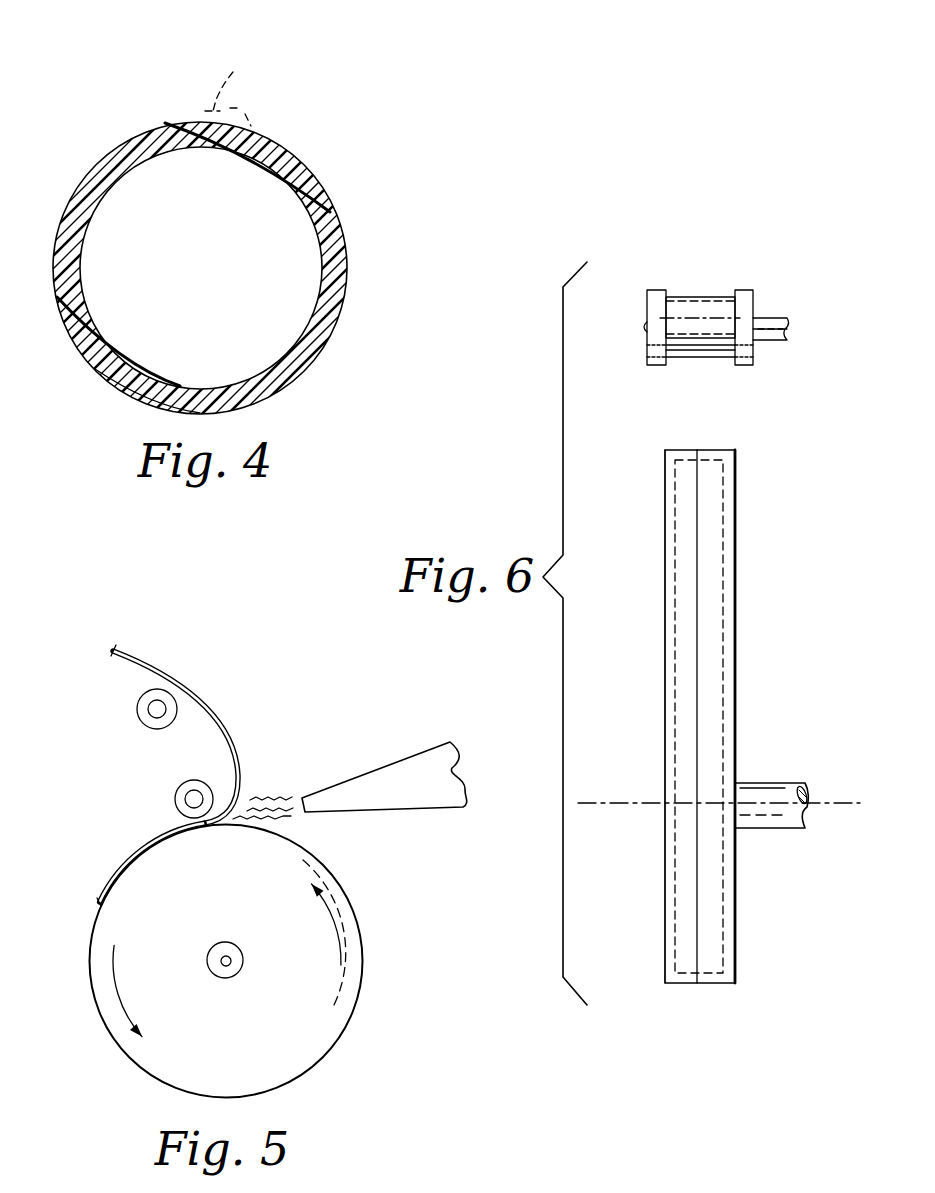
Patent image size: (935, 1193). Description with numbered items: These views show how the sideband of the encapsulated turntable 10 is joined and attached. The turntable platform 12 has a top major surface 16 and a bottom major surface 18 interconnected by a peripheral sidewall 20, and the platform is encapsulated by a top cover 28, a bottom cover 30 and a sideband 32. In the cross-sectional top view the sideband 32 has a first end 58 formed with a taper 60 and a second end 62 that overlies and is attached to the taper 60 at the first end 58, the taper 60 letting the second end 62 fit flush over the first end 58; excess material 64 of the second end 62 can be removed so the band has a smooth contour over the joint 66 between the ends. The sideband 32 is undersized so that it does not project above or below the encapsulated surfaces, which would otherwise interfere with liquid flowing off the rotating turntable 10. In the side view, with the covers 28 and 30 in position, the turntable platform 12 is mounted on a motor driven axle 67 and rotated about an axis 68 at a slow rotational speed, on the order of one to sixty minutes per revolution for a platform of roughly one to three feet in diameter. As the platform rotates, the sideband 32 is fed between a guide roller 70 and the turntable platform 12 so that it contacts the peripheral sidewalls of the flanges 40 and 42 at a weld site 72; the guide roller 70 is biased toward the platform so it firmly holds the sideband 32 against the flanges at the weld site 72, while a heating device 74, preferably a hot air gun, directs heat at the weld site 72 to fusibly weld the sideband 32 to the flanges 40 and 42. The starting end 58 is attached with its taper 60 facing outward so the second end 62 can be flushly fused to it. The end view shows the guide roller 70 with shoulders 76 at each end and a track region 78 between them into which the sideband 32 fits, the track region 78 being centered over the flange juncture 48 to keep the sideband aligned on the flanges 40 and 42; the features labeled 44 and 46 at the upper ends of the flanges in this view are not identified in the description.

In FIG. 4, the encapsulated turntable 10 is at (98, 73).
In FIG. 4, the turntable platform 12 is at (292, 223).
In FIG. 5, the turntable platform 12 is at (333, 1005).
In FIG. 6, the turntable platform 12 is at (717, 545).
In FIG. 4, the top major surface 16 is at (292, 318).
In FIG. 6, the top major surface 16 is at (672, 825).
In FIG. 6, the bottom major surface 18 is at (723, 703).
In FIG. 5, the peripheral sidewall 20 is at (337, 895).
In FIG. 6, the peripheral sidewall 20 is at (703, 973).
In FIG. 5, the top cover 28 is at (212, 1065).
In FIG. 6, the top cover 28 is at (665, 902).
In FIG. 6, the bottom cover 30 is at (735, 927).
In FIG. 4, the sideband 32 is at (333, 248).
In FIG. 5, the sideband 32 is at (203, 707).
In FIG. 6, the flange 40 is at (668, 640).
In FIG. 6, the flange 42 is at (732, 603).
In FIG. 6, the first end 44 is at (685, 453).
In FIG. 6, the second end 46 is at (710, 453).
In FIG. 6, the flange juncture 48 is at (697, 575).
In FIG. 4, the first end 58 is at (243, 145).
In FIG. 5, the first end 58 is at (105, 880).
In FIG. 4, the taper 60 is at (203, 147).
In FIG. 5, the taper 60 is at (97, 903).
In FIG. 4, the second end 62 is at (205, 147).
In FIG. 4, the excess material 64 is at (234, 86).
In FIG. 4, the joint 66 is at (253, 127).
In FIG. 5, the motor driven axle 67 is at (208, 953).
In FIG. 6, the motor driven axle 67 is at (783, 783).
In FIG. 5, the axis 68 is at (228, 961).
In FIG. 6, the axis 68 is at (847, 803).
In FIG. 5, the guide roller 70 is at (170, 787).
In FIG. 6, the guide roller 70 is at (760, 282).
In FIG. 5, the weld site 72 is at (207, 827).
In FIG. 5, the heating device 74 is at (385, 765).
In FIG. 6, the shoulders 76 is at (657, 357).
In FIG. 6, the track region 78 is at (692, 312).